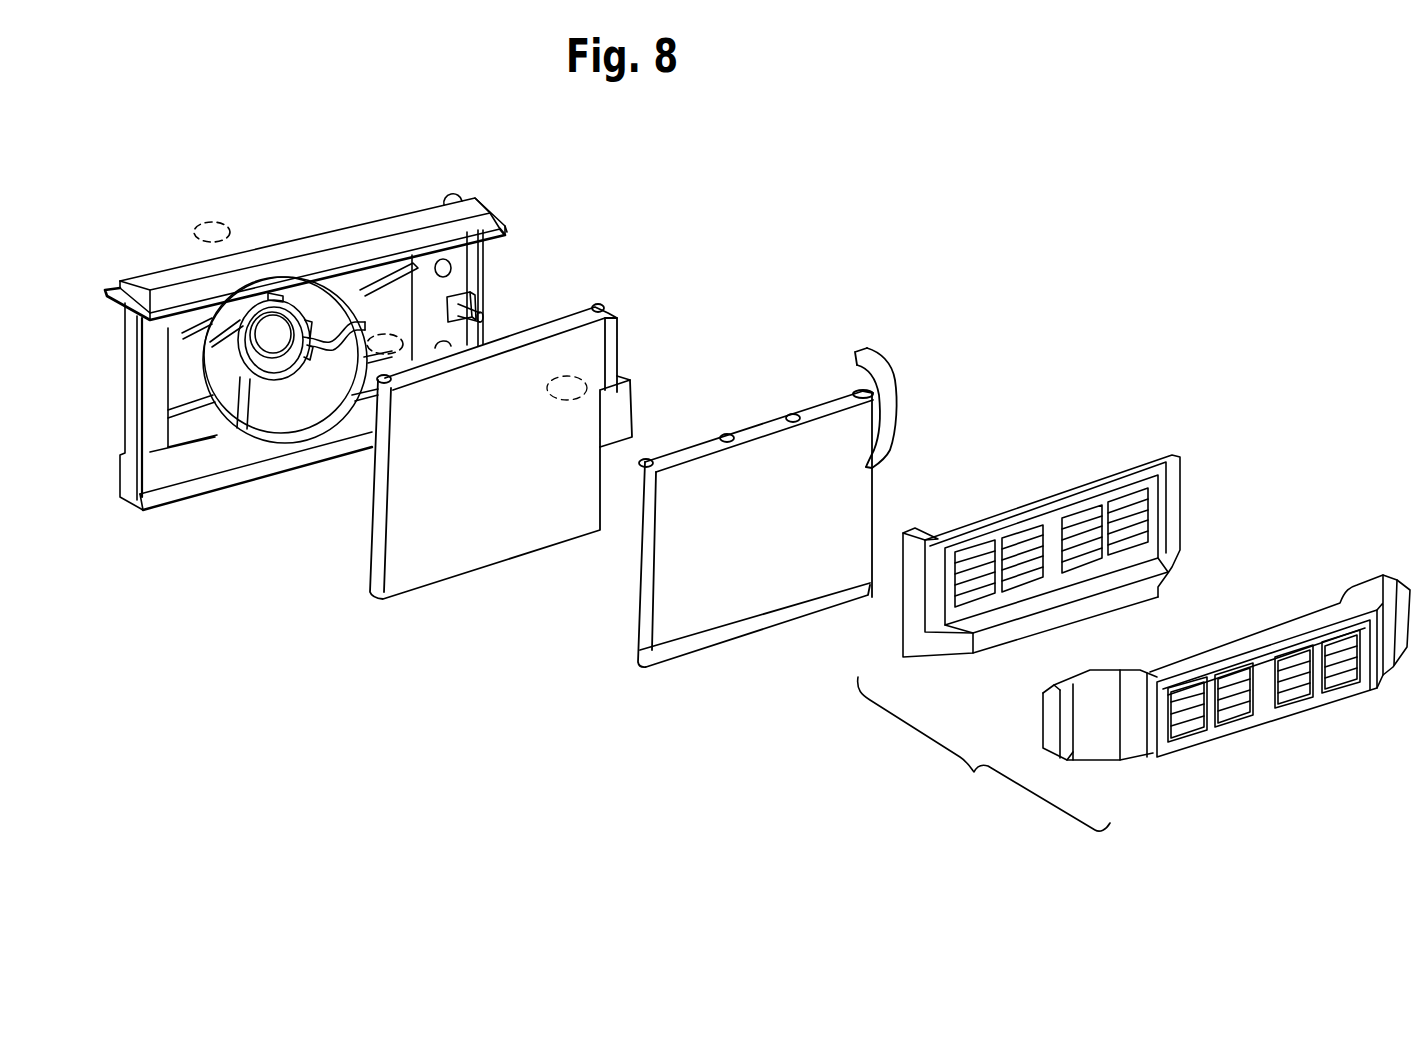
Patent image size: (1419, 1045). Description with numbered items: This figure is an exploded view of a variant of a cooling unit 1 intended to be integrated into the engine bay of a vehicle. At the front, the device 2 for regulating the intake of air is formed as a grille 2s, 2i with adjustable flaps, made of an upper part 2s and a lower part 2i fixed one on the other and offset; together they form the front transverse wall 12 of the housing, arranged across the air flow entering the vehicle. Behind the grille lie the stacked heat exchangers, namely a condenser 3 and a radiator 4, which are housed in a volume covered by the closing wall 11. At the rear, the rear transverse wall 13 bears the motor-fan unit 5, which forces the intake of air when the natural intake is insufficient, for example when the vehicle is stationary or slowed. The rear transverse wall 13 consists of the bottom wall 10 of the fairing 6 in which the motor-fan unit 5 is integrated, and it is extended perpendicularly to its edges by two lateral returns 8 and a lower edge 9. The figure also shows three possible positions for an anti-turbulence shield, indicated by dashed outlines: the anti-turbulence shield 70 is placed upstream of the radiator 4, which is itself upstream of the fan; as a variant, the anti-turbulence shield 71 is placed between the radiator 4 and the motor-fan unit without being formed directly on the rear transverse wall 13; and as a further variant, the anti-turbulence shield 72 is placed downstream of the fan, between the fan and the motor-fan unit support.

The cooling unit 1 is at (1040, 353).
The device for regulating the intake of air 2 is at (1128, 490).
The upper part of the grille 2s is at (1018, 522).
The lower part of the grille 2i is at (1095, 707).
The condenser 3 is at (755, 487).
The radiator 4 is at (507, 370).
The motor-fan unit 5 is at (300, 325).
The fairing 6 is at (165, 472).
The lateral returns 8 is at (128, 415).
The lower edge 9 is at (280, 478).
The bottom wall 10 is at (183, 320).
The closing wall 11 is at (372, 222).
The front transverse wall 12 is at (984, 754).
The rear transverse wall 13 is at (110, 349).
The anti-turbulence shield 70 is at (574, 384).
The anti-turbulence shield 71 is at (407, 336).
The anti-turbulence shield 72 is at (208, 222).